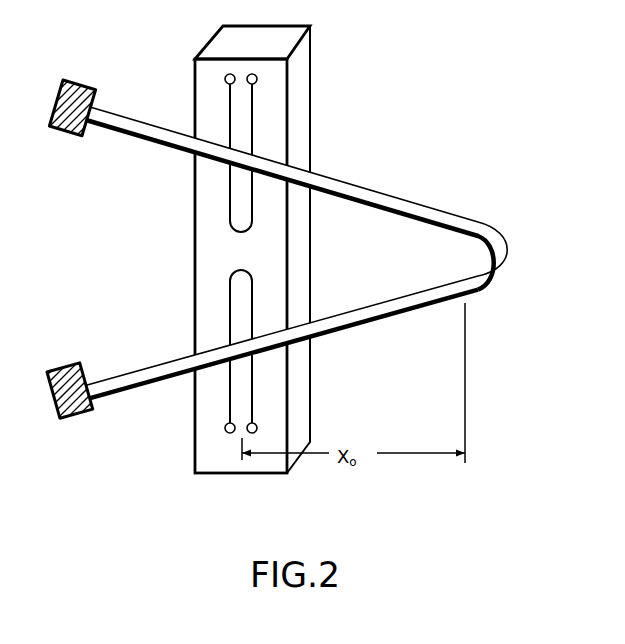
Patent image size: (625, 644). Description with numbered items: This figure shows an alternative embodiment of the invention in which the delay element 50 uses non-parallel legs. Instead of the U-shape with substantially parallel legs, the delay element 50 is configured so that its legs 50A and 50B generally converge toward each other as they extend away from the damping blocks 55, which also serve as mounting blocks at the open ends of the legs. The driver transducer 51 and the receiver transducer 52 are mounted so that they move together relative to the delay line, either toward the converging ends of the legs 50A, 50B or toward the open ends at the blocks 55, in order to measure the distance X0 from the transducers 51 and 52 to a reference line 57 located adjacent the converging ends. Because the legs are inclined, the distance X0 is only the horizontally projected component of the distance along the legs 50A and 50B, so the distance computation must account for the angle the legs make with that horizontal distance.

The delay element 50 is at (268, 246).
The first leg of delay element 50A is at (325, 177).
The second leg of delay element 50B is at (347, 330).
The driver transducer 51 is at (265, 143).
The receiver transducer 52 is at (214, 387).
The damping block 55 is at (97, 97).
The reference line 57 is at (466, 392).